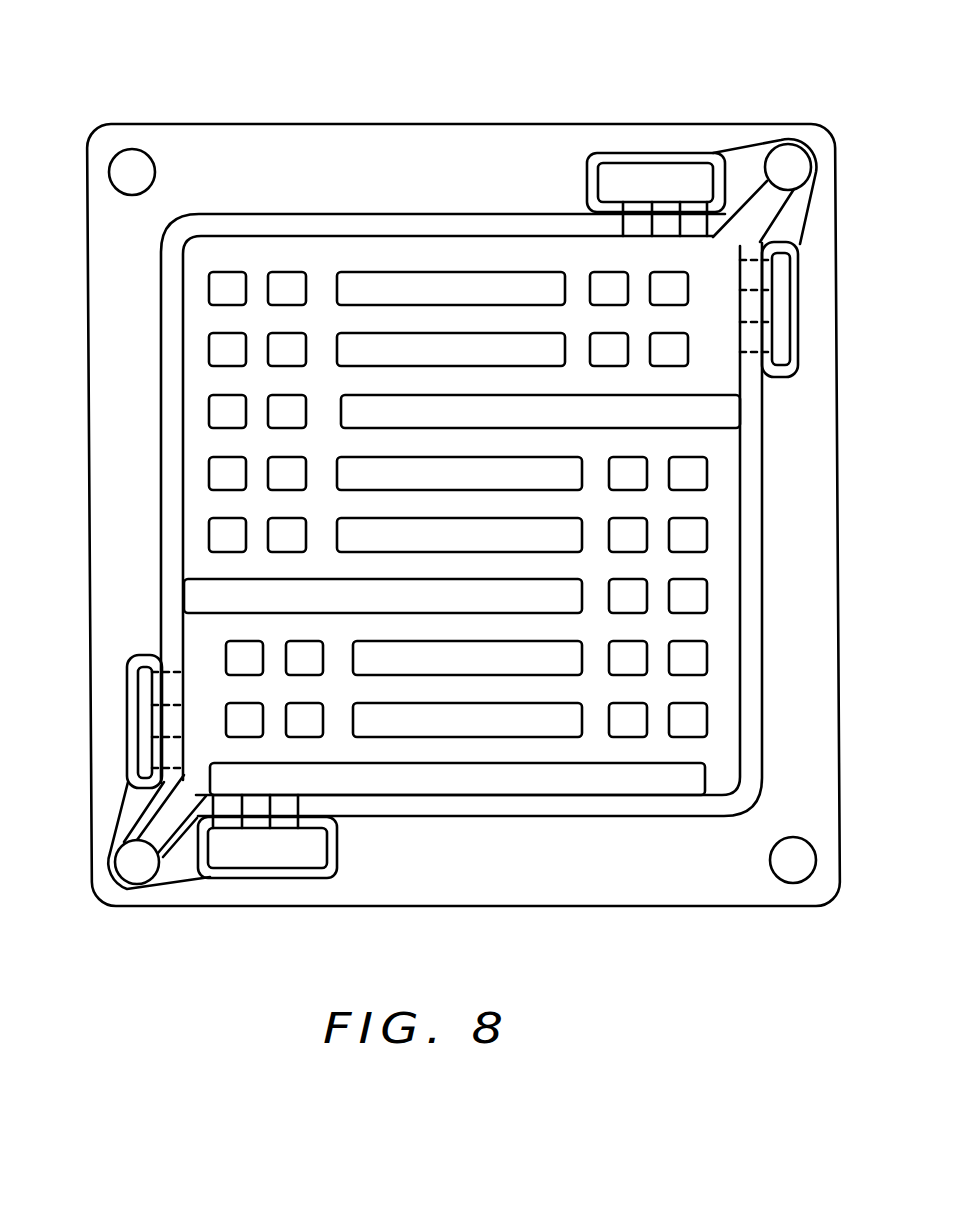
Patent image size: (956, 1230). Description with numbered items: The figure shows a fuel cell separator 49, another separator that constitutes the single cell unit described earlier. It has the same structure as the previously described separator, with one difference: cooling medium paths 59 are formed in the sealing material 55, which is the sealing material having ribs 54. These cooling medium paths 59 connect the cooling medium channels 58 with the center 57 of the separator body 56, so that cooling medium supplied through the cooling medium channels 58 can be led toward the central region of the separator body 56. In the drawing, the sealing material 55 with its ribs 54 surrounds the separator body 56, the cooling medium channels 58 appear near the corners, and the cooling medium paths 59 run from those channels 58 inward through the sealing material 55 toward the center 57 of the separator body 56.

The fuel cell separator 49 is at (419, 117).
The ribs 54 is at (460, 212).
The sealing material 55 is at (555, 133).
The separator body 56 is at (238, 381).
The center of the separator body 57 is at (250, 445).
The cooling medium channels 58 is at (788, 153).
The cooling medium paths 59 is at (771, 224).